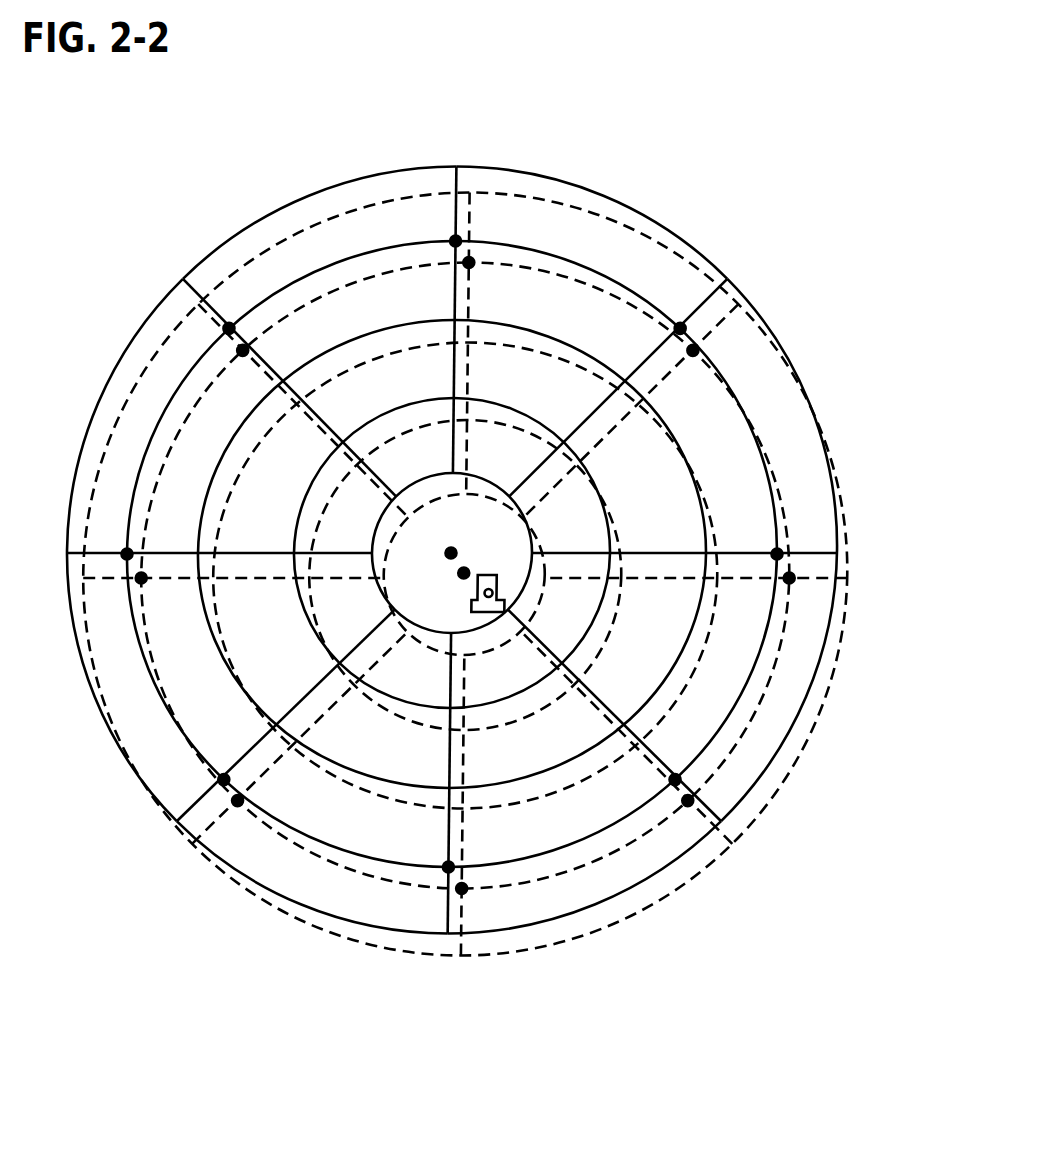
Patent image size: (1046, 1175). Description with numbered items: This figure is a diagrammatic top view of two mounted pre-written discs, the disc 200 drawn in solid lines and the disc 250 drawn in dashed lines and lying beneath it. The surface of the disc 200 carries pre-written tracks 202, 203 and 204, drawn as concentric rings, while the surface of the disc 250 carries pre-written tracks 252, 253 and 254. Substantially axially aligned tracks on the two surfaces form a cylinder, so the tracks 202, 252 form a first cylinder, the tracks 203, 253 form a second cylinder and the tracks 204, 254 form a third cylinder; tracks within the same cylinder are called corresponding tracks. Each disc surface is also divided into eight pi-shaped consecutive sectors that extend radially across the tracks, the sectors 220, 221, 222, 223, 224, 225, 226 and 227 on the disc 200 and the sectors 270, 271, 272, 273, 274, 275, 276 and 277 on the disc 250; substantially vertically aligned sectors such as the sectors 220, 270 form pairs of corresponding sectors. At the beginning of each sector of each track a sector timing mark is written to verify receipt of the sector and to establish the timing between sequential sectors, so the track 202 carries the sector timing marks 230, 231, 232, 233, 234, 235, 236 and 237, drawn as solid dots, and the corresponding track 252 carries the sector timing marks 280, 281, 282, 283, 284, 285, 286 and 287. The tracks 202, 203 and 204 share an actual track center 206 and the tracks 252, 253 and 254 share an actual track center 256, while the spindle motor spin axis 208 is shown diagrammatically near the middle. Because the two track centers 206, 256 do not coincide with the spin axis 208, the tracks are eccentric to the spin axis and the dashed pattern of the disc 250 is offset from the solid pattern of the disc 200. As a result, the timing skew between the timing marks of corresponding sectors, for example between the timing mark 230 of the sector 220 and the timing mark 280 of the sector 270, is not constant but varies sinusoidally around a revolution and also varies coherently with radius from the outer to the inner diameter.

The disc 200 is at (552, 161).
The pre-written track 202 is at (121, 435).
The pre-written track 203 is at (200, 431).
The pre-written track 204 is at (286, 475).
The actual track center 206 is at (451, 553).
The spin axis 208 is at (497, 584).
The sector 220 is at (289, 283).
The sector 221 is at (577, 265).
The sector 222 is at (723, 381).
The sector 223 is at (758, 662).
The sector 224 is at (616, 835).
The sector 225 is at (365, 855).
The sector 226 is at (143, 652).
The sector 227 is at (131, 488).
The sector timing mark 230 is at (226, 328).
The sector timing mark 231 is at (452, 241).
The sector timing mark 232 is at (678, 328).
The sector timing mark 233 is at (777, 554).
The sector timing mark 234 is at (678, 780).
The sector timing mark 235 is at (452, 867).
The sector timing mark 236 is at (226, 780).
The sector timing mark 237 is at (127, 554).
The disc 250 is at (612, 952).
The pre-written track 252 is at (166, 494).
The pre-written track 253 is at (232, 526).
The pre-written track 254 is at (326, 527).
The actual track center 256 is at (464, 573).
The sector 270 is at (317, 297).
The sector 271 is at (569, 285).
The sector 272 is at (779, 500).
The sector 273 is at (749, 676).
The sector 274 is at (539, 865).
The sector 275 is at (345, 855).
The sector 276 is at (149, 640).
The sector 277 is at (194, 407).
The sector timing mark 280 is at (240, 350).
The sector timing mark 281 is at (466, 262).
The sector timing mark 282 is at (691, 350).
The sector timing mark 283 is at (790, 578).
The sector timing mark 284 is at (691, 801).
The sector timing mark 285 is at (466, 888).
The sector timing mark 286 is at (240, 801).
The sector timing mark 287 is at (142, 578).